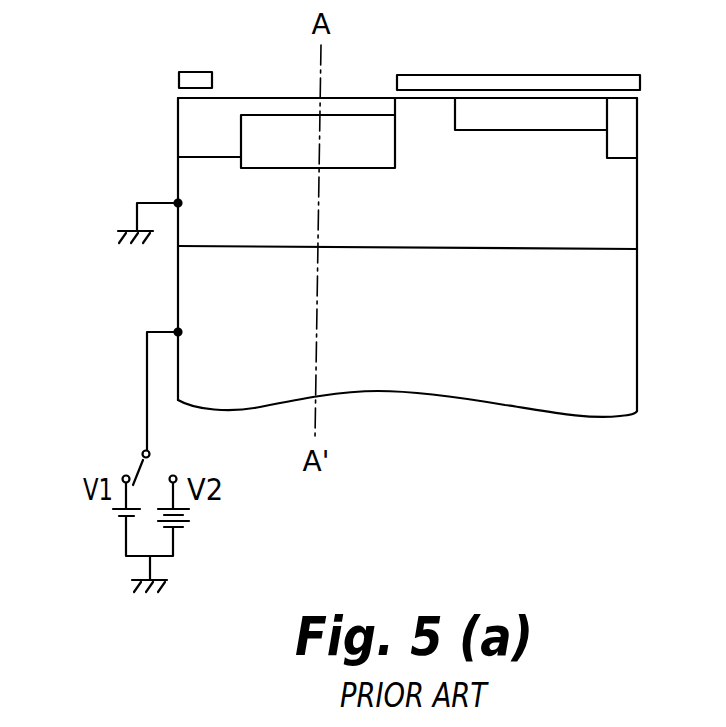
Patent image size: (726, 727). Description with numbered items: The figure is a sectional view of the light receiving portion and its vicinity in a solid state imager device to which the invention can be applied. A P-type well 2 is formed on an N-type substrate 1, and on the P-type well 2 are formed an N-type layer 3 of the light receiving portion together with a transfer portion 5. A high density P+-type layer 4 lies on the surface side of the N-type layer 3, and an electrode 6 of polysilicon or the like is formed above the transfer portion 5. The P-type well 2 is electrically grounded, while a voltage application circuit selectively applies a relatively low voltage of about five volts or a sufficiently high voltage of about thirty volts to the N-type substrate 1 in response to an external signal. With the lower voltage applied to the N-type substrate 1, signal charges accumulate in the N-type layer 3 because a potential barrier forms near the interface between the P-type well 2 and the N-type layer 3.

The N-type substrate 1 is at (624, 306).
The P-type well 2 is at (626, 193).
The N-type layer 3 is at (352, 135).
The high density P+-type layer 4 is at (268, 106).
The transfer portion 5 is at (493, 112).
The electrode 6 is at (554, 84).